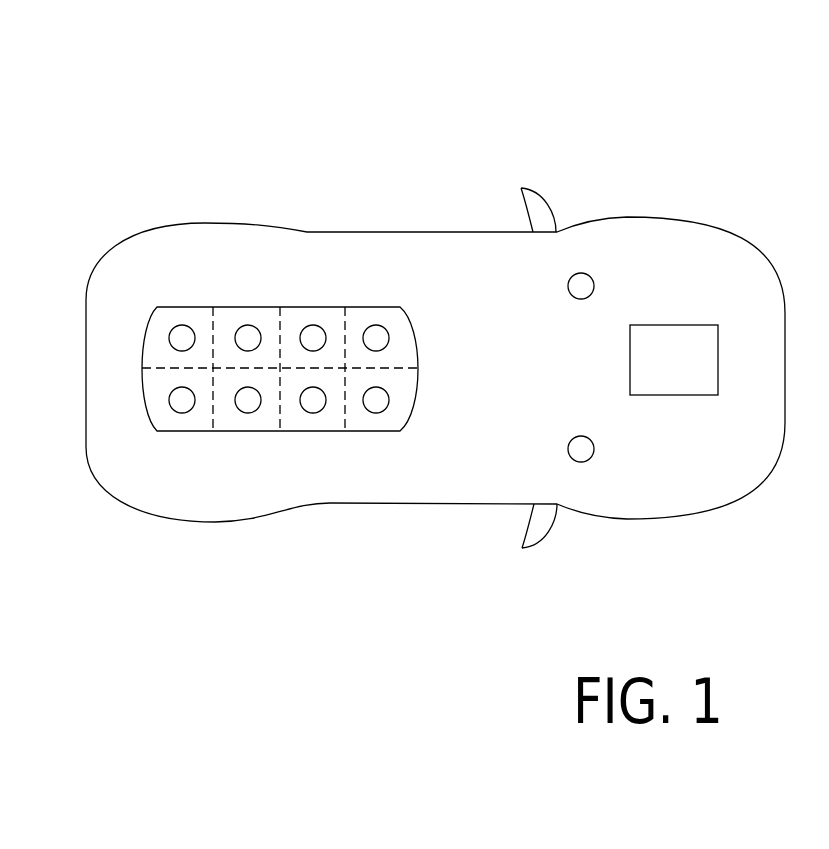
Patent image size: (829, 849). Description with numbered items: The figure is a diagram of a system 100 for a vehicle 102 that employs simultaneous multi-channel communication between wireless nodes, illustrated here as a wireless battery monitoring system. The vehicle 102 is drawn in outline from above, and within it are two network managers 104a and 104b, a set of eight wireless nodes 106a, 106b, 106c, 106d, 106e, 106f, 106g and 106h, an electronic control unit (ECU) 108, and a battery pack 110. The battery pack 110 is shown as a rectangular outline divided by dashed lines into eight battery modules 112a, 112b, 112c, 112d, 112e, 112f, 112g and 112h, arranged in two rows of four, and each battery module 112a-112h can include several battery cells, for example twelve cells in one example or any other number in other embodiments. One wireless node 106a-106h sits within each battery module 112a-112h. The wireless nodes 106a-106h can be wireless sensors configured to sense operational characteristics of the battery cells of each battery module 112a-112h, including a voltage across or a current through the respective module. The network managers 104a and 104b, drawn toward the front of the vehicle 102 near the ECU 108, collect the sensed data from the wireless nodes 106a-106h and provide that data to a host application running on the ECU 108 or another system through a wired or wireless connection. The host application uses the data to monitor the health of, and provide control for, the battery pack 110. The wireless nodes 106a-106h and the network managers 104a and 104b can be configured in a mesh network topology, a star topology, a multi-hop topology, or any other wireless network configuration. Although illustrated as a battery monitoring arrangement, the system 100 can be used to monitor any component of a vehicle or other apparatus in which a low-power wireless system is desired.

The system 100 is at (638, 43).
The vehicle 102 is at (373, 232).
The network manager 104a is at (594, 288).
The network manager 104b is at (594, 448).
The wireless node 106a is at (178, 325).
The wireless node 106b is at (249, 325).
The wireless node 106c is at (317, 325).
The wireless node 106d is at (379, 327).
The wireless node 106e is at (171, 413).
The wireless node 106f is at (249, 413).
The wireless node 106g is at (313, 413).
The wireless node 106h is at (385, 410).
The electronic control unit (ECU) 108 is at (667, 325).
The battery pack 110 is at (418, 357).
The battery module 112a is at (152, 350).
The battery module 112b is at (224, 324).
The battery module 112c is at (329, 322).
The battery module 112d is at (402, 340).
The battery module 112e is at (152, 396).
The battery module 112f is at (223, 422).
The battery module 112g is at (330, 418).
The battery module 112h is at (402, 396).